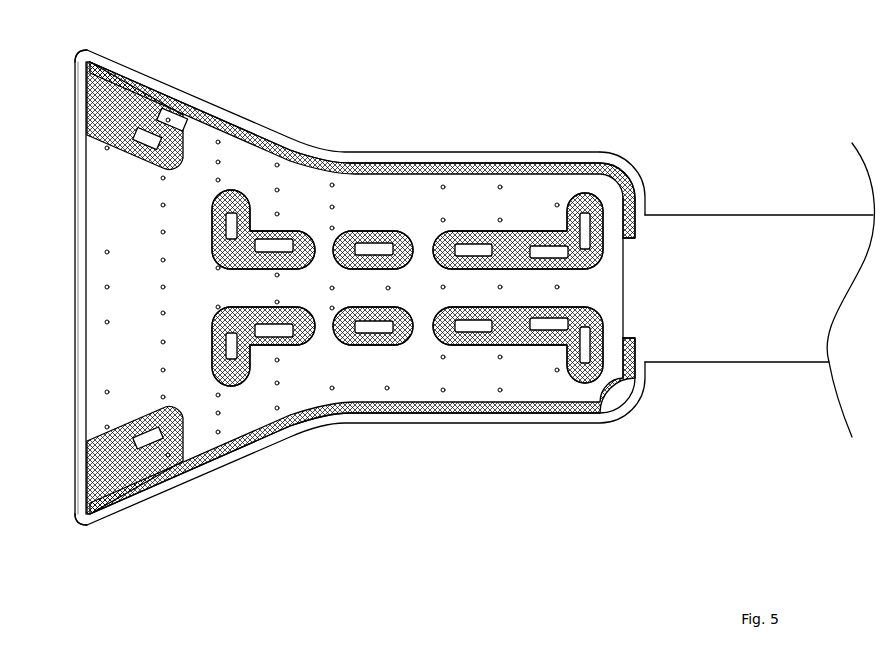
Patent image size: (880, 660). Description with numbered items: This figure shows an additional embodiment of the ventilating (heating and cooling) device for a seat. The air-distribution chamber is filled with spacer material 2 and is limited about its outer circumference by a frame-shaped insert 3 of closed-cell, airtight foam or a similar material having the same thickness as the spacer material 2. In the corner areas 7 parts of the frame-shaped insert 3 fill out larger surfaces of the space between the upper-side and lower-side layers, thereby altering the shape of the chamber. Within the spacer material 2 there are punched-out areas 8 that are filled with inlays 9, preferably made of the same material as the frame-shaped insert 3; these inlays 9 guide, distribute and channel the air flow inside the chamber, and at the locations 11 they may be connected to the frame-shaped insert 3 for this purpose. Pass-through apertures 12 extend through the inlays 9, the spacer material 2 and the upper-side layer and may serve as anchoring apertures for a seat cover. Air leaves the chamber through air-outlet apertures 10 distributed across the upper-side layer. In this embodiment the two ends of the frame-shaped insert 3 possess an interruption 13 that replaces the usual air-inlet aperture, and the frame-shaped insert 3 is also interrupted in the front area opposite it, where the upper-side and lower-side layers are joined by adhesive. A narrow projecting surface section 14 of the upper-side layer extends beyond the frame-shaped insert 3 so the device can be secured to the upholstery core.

The spacer material 2 is at (362, 288).
The frame-shaped insert 3 is at (354, 310).
The corner areas 7 is at (138, 282).
The punched-out areas 8 is at (394, 281).
The inlays 9 is at (407, 291).
The air-outlet apertures 10 is at (292, 299).
The connection locations 11 is at (67, 280).
The pass-through apertures 12 is at (370, 287).
The interruption 13 is at (455, 290).
The projecting surface section 14 is at (622, 162).